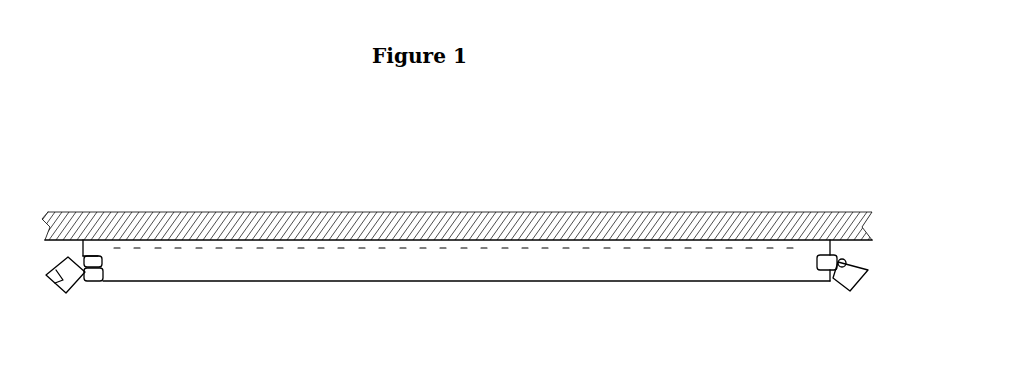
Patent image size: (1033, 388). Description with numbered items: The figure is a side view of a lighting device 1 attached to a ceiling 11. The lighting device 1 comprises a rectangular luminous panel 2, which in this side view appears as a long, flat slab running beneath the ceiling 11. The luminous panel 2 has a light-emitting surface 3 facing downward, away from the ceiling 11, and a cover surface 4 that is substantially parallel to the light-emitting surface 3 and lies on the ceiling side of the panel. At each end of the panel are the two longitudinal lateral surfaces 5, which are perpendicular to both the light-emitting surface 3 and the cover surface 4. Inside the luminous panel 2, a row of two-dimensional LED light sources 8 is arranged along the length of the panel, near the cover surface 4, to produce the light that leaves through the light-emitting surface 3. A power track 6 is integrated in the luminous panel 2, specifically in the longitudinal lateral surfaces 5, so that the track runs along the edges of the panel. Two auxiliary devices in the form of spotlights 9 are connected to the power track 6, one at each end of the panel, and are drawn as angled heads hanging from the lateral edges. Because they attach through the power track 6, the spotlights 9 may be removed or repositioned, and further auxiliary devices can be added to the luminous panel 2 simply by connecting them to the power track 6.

The lighting device 1 is at (775, 321).
The luminous panel 2 is at (331, 268).
The light-emitting surface 3 is at (498, 282).
The cover surface 4 is at (553, 240).
The longitudinal lateral surfaces 5 is at (832, 241).
The power track 6 is at (100, 278).
The 2D LED light sources 8 is at (250, 240).
The spotlights 9 is at (53, 287).
The ceiling 11 is at (683, 207).